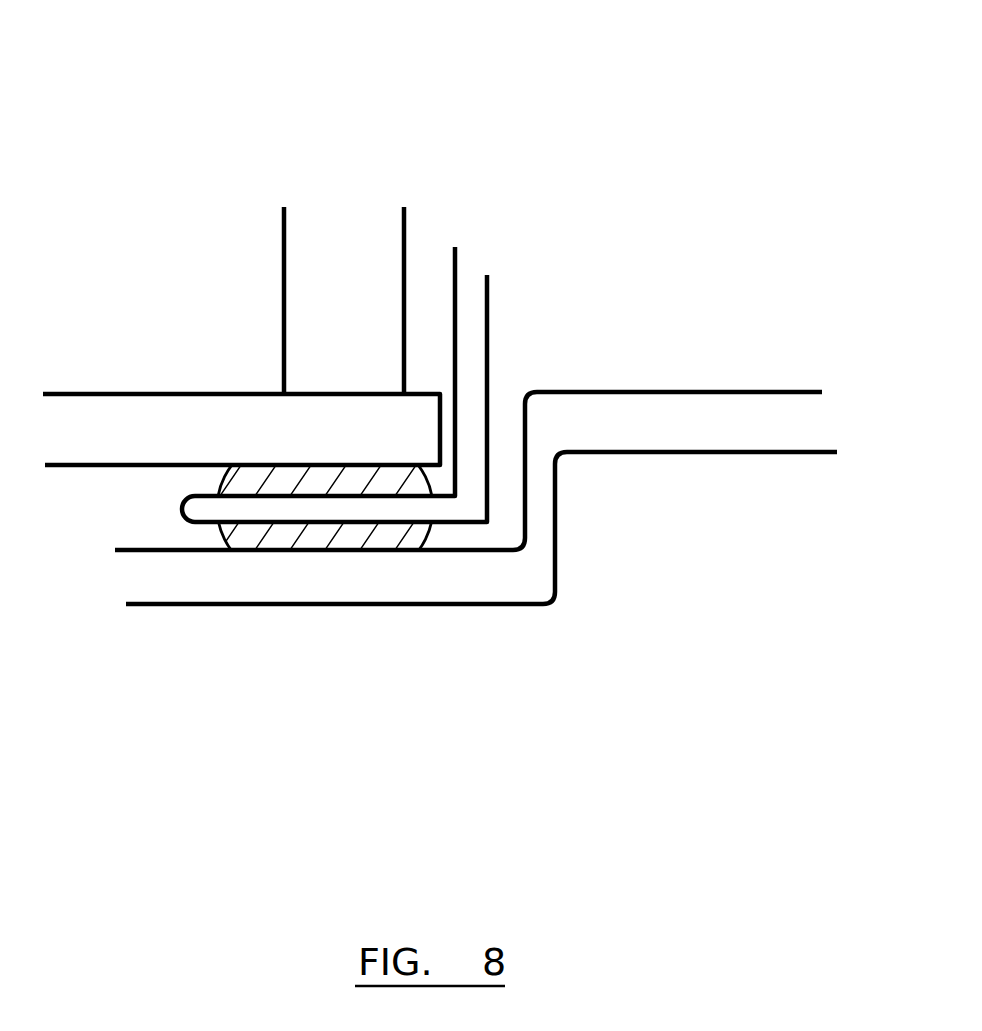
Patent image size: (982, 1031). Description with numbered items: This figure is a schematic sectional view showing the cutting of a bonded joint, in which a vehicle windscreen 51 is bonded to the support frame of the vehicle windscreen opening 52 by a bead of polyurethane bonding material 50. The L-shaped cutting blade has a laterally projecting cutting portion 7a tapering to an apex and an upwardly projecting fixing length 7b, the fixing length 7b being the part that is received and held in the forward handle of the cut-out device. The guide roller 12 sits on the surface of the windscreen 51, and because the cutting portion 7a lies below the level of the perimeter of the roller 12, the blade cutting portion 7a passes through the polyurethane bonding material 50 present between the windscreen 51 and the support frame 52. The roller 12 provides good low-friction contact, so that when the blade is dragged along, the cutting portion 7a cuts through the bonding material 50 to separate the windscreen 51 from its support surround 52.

The guide roller 12 is at (342, 248).
The vehicle windscreen 51 is at (150, 433).
The fixing length 7b is at (475, 330).
The cutting portion 7a is at (305, 507).
The bonding material 50 is at (433, 533).
The vehicle windscreen opening 52 is at (545, 517).